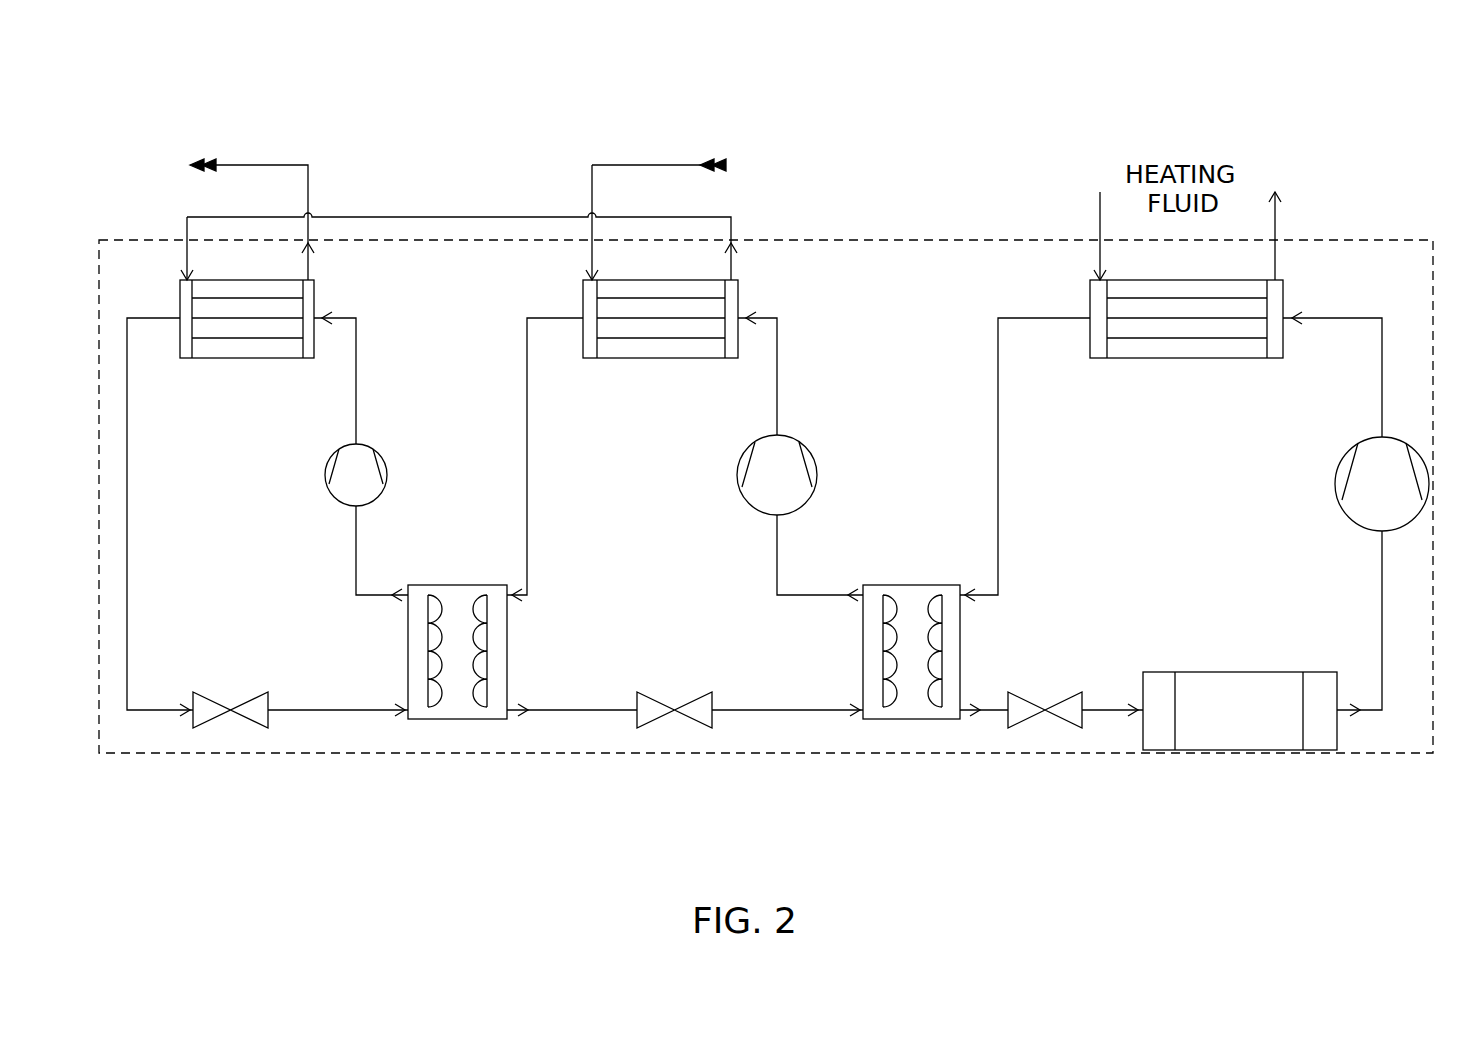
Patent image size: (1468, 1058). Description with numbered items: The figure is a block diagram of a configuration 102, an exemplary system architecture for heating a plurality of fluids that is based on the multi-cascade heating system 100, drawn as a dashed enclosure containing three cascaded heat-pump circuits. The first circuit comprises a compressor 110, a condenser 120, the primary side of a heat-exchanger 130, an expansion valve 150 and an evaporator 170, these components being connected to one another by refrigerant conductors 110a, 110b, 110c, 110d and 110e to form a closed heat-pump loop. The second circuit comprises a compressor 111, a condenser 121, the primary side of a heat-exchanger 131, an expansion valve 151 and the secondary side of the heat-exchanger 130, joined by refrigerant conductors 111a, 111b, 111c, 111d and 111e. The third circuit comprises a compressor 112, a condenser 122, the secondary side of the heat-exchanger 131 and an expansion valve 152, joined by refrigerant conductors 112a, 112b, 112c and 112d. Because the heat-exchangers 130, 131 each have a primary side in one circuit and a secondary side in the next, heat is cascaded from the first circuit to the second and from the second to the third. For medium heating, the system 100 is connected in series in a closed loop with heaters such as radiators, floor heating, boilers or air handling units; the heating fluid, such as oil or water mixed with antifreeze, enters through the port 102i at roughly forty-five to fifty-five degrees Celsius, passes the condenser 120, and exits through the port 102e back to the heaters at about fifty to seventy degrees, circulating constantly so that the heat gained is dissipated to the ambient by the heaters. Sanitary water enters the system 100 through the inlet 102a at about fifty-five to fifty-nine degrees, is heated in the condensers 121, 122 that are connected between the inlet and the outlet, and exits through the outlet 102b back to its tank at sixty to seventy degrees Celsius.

The multi-cascade heating system 100 is at (458, 240).
The configuration 102 is at (1315, 97).
The inlet 102a is at (723, 165).
The outlet 102b is at (190, 163).
The port 102i is at (1100, 260).
The port 102e is at (1275, 255).
The compressor 110 is at (1360, 440).
The refrigerant conductor 110a is at (1382, 360).
The refrigerant conductor 110b is at (998, 515).
The refrigerant conductor 110c is at (990, 710).
The refrigerant conductor 110d is at (1115, 710).
The refrigerant conductor 110e is at (1382, 617).
The compressor 111 is at (790, 440).
The refrigerant conductor 111a is at (777, 400).
The refrigerant conductor 111b is at (527, 493).
The refrigerant conductor 111c is at (560, 710).
The refrigerant conductor 111d is at (760, 710).
The refrigerant conductor 111e is at (777, 535).
The compressor 112 is at (375, 455).
The refrigerant conductor 112a is at (356, 388).
The refrigerant conductor 112b is at (127, 525).
The refrigerant conductor 112c is at (335, 710).
The refrigerant conductor 112d is at (356, 558).
The condenser 120 is at (1135, 358).
The condenser 121 is at (595, 358).
The condenser 122 is at (195, 358).
The heat-exchanger 130 is at (918, 585).
The heat-exchanger 131 is at (465, 585).
The expansion valve 150 is at (1058, 690).
The expansion valve 151 is at (660, 690).
The expansion valve 152 is at (210, 690).
The evaporator 170 is at (1230, 672).